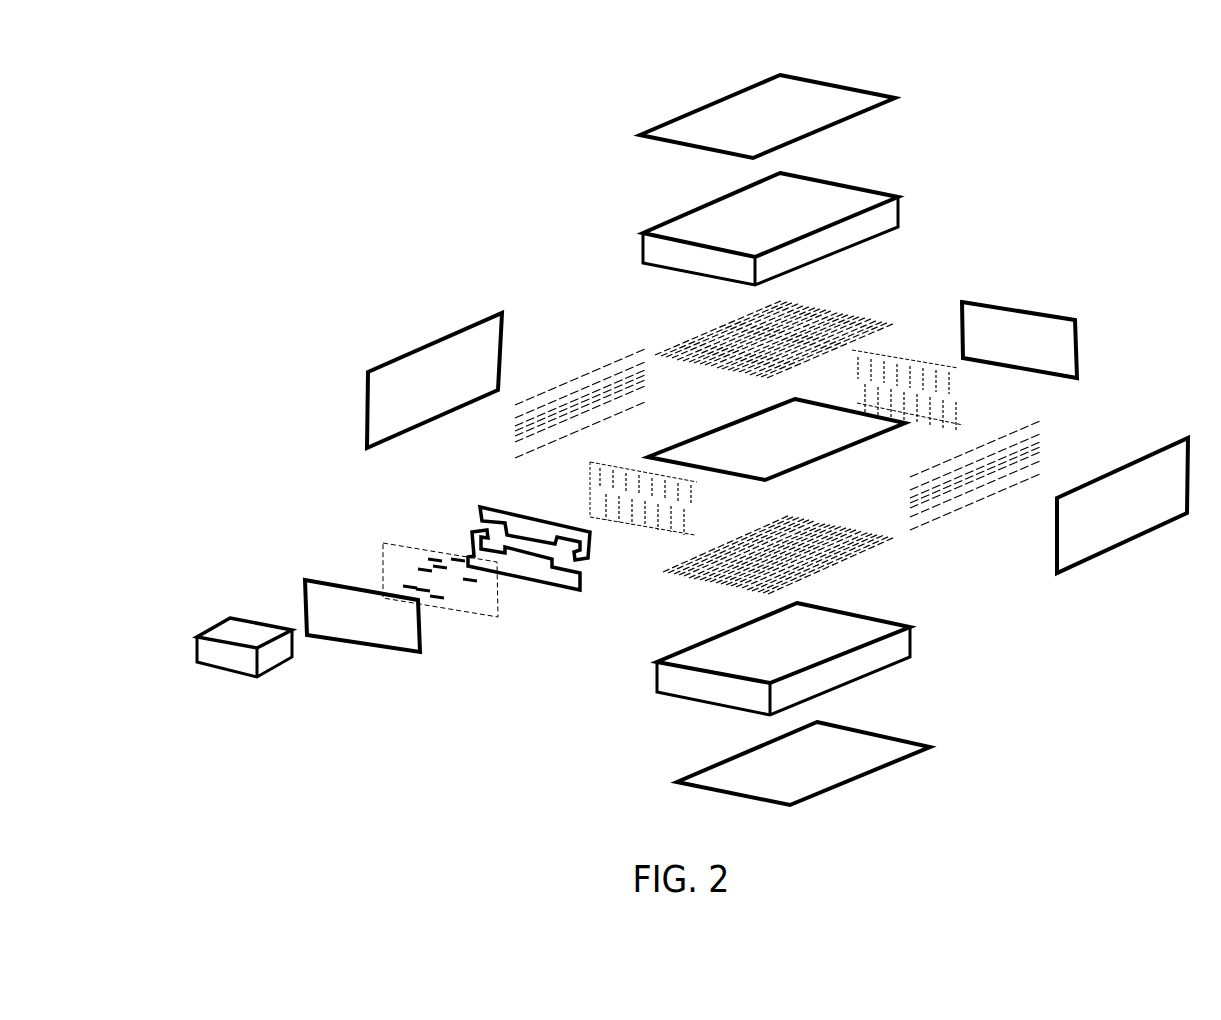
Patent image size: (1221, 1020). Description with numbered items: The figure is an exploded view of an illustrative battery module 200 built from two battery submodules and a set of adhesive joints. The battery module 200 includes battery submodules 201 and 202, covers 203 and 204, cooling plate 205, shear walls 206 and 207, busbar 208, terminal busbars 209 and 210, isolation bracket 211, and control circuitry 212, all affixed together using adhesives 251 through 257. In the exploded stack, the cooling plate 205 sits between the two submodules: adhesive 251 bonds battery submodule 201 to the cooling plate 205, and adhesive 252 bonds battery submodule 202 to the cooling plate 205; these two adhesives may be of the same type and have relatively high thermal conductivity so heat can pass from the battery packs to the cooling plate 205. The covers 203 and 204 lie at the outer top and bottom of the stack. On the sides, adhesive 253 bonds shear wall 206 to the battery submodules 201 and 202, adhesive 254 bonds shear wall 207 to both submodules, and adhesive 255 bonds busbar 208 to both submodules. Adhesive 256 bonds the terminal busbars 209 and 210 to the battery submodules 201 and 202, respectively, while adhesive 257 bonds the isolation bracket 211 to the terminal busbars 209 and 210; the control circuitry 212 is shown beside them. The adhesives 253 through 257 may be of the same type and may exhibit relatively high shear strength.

The battery module 200 is at (1167, 78).
The battery submodule 201 is at (748, 225).
The battery submodule 202 is at (764, 653).
The cover 203 is at (761, 127).
The cover 204 is at (786, 779).
The cooling plate 205 is at (764, 454).
The shear wall 206 is at (413, 393).
The shear wall 207 is at (1102, 518).
The busbar 208 is at (997, 353).
The terminal busbar 209 is at (478, 510).
The terminal busbar 210 is at (470, 531).
The isolation bracket 211 is at (342, 630).
The control circuitry 212 is at (197, 655).
The adhesive 251 is at (858, 315).
The adhesive 252 is at (865, 558).
The adhesive 253 is at (567, 383).
The adhesive 254 is at (1040, 462).
The adhesive 255 is at (917, 360).
The adhesive 256 is at (644, 532).
The adhesive 257 is at (383, 572).